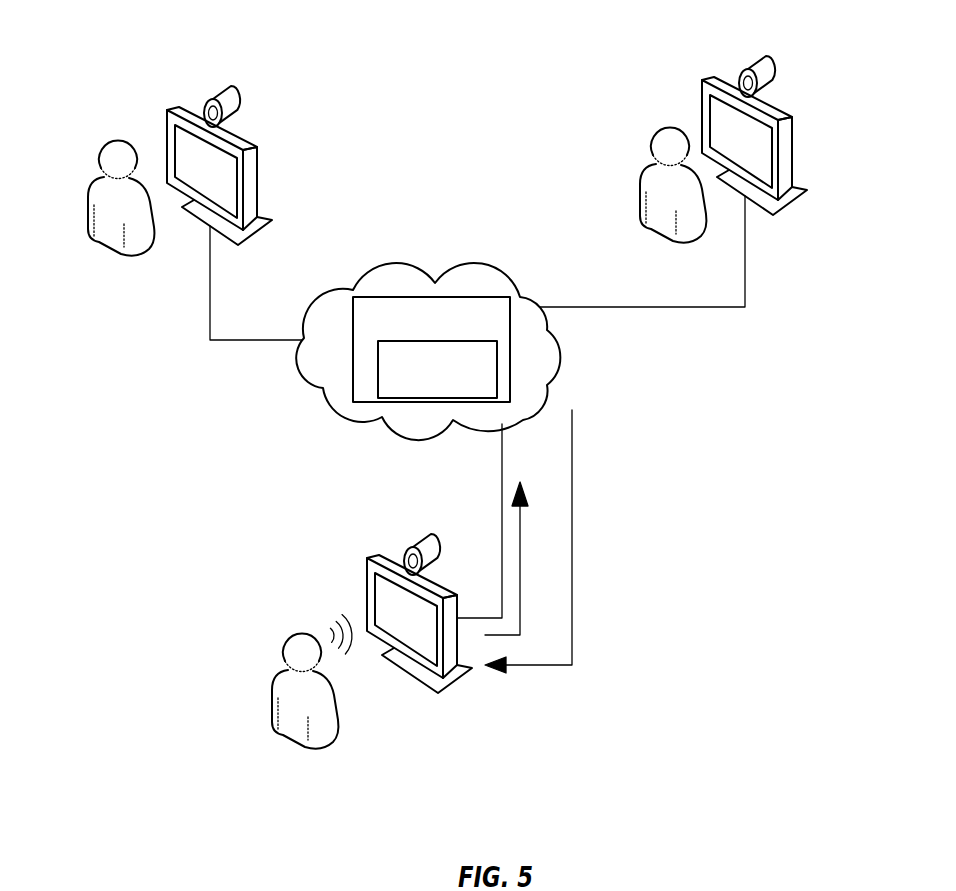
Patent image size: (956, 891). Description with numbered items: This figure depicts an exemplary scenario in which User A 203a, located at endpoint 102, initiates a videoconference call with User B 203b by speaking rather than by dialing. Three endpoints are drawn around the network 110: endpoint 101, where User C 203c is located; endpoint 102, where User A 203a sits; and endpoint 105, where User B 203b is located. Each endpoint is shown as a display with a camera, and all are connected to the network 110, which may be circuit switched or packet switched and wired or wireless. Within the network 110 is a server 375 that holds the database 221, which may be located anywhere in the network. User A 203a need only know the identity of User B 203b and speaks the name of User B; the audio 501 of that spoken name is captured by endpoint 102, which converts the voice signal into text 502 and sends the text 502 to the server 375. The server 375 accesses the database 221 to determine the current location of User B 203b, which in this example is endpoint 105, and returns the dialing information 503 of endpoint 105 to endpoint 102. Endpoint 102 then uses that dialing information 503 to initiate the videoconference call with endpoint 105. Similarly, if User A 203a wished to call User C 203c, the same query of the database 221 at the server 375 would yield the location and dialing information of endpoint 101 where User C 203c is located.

The endpoint 1 101 is at (232, 143).
The endpoint 2 102 is at (405, 607).
The endpoint 5 105 is at (748, 129).
The network 110 is at (487, 268).
The User A 203a is at (302, 633).
The User B 203b is at (670, 127).
The User C 203c is at (118, 140).
The database 221 is at (437, 369).
The server 375 is at (353, 308).
The audio 501 is at (350, 668).
The text 502 is at (523, 592).
The endpoint 5 dialing information 503 is at (573, 532).